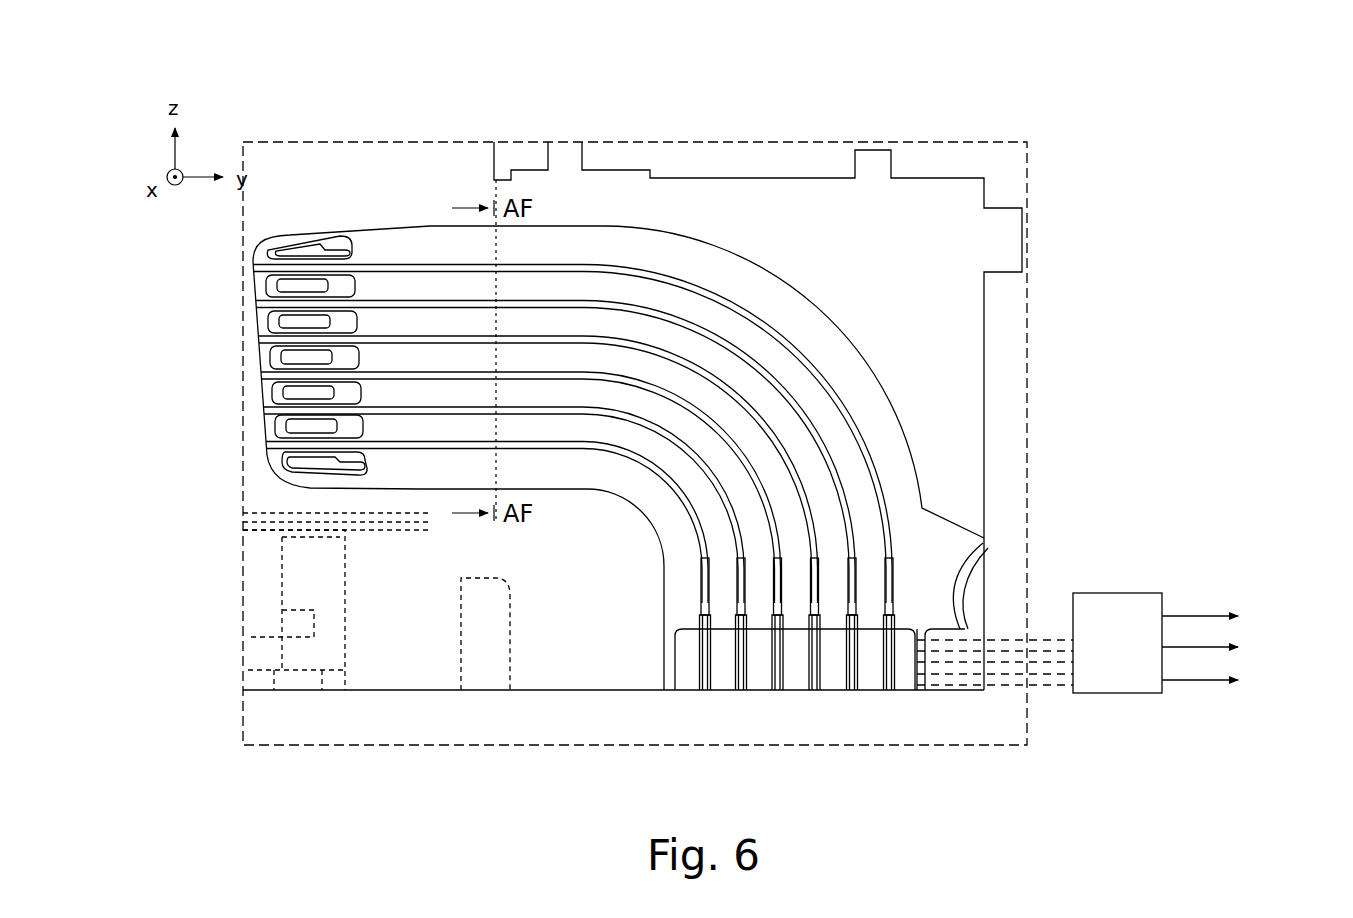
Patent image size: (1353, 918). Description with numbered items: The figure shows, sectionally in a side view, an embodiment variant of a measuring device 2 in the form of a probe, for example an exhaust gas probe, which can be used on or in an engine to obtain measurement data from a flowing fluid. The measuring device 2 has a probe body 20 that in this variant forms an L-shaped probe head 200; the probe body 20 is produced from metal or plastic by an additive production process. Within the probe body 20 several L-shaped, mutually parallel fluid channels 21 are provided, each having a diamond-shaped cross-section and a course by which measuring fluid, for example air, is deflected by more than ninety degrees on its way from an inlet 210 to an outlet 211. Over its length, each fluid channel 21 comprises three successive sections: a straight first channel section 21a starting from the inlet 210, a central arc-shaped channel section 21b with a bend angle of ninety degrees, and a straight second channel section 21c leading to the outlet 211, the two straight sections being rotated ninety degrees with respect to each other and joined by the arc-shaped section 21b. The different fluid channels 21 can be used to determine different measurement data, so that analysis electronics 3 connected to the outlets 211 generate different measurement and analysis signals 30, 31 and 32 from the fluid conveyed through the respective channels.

The measuring device 2 is at (433, 115).
The probe body 20 is at (833, 316).
The probe head 200 is at (778, 282).
The fluid channel 21 is at (694, 342).
The first channel section 21a is at (545, 262).
The arc-shaped channel section 21b is at (683, 284).
The second channel section 21c is at (893, 553).
The inlet 210 is at (257, 358).
The outlet 211 is at (852, 616).
The analysis electronics 3 is at (1039, 643).
The measurement and analysis signal 30 is at (1195, 612).
The measurement and analysis signal 31 is at (1218, 646).
The measurement and analysis signal 32 is at (1190, 684).